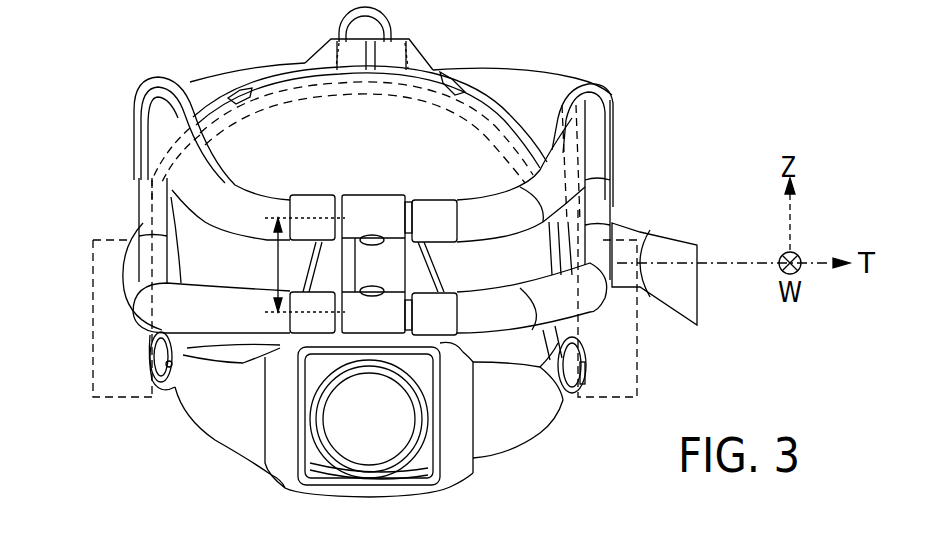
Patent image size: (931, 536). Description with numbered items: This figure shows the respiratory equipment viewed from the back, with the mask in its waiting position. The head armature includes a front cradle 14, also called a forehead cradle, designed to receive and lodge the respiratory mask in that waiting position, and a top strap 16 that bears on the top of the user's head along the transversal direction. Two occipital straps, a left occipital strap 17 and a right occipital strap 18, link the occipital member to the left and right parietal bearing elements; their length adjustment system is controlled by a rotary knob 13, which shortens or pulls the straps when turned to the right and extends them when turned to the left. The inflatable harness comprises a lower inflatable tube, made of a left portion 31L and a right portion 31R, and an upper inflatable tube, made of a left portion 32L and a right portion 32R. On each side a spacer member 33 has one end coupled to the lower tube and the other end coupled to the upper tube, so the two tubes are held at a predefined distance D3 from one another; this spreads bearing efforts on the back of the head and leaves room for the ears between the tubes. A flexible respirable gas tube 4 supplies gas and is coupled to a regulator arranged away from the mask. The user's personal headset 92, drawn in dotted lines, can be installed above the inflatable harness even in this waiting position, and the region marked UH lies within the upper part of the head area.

The front cradle 14 is at (448, 67).
The top strap 16 is at (268, 100).
The personal headset 92 is at (245, 132).
The left portion of the upper inflatable tube 32L is at (193, 87).
The right portion of the upper inflatable tube 32R is at (563, 87).
The spacer member 33 is at (139, 202).
The left portion of the lower inflatable tube 31L is at (162, 313).
The right portion of the lower inflatable tube 31R is at (610, 292).
The respirable gas tube 4 is at (708, 237).
The rotary knob 13 is at (420, 458).
The left occipital strap 17 is at (510, 425).
The right occipital strap 18 is at (233, 425).
The predefined distance D3 is at (290, 265).
The upper head region UH is at (395, 167).